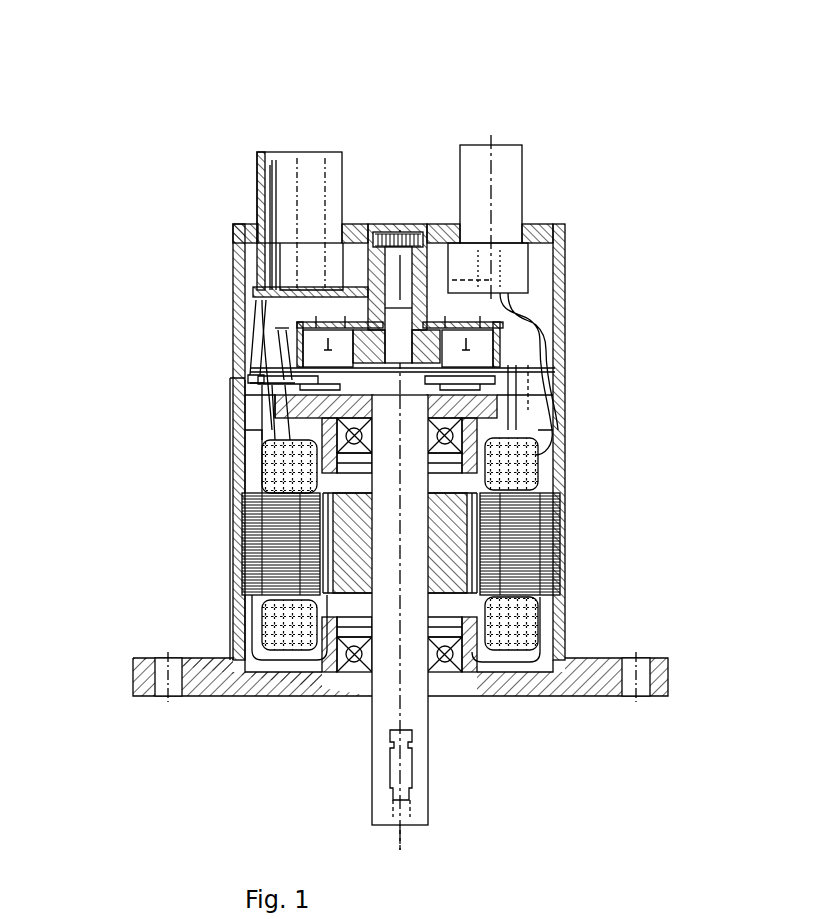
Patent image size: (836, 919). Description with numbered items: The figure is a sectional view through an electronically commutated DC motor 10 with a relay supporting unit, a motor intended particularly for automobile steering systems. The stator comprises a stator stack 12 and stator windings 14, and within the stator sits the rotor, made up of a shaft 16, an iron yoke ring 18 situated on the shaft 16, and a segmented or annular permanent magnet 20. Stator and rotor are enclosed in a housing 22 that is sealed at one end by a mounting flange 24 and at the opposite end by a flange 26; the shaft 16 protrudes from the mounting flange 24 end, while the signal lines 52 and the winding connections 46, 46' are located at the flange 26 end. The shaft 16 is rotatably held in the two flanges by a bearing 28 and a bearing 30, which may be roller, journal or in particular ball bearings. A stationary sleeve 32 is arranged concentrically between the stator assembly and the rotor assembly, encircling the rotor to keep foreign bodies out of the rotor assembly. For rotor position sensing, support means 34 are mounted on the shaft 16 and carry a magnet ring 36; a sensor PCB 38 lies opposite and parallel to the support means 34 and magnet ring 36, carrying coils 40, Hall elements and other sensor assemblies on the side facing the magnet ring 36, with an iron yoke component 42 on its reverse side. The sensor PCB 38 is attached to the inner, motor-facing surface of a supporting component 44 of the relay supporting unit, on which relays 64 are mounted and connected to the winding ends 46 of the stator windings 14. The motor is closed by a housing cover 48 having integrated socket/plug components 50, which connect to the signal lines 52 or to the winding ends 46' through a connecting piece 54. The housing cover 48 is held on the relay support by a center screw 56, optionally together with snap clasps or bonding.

The DC motor 10 is at (261, 83).
The stator stack 12 is at (237, 532).
The stator windings 14 is at (272, 465).
The shaft 16 is at (385, 712).
The iron yoke ring 18 is at (237, 502).
The permanent magnet 20 is at (237, 566).
The housing 22 is at (568, 620).
The mounting flange 24 is at (175, 697).
The flange 26 is at (290, 388).
The bearing 28 is at (445, 654).
The bearing 30 is at (492, 450).
The stationary sleeve 32 is at (283, 612).
The support means 34 is at (537, 403).
The magnet ring 36 is at (500, 380).
The sensor PCB 38 is at (500, 375).
The coils 40 is at (248, 345).
The iron yoke component 42 is at (262, 236).
The supporting component 44 is at (487, 283).
The winding ends 46 is at (160, 306).
The winding ends 46' is at (173, 281).
The housing cover 48 is at (562, 257).
The socket/plug components 50 is at (458, 165).
The signal lines 52 is at (440, 318).
The connecting piece 54 is at (262, 340).
The center screw 56 is at (455, 205).
The relays 64 is at (485, 340).